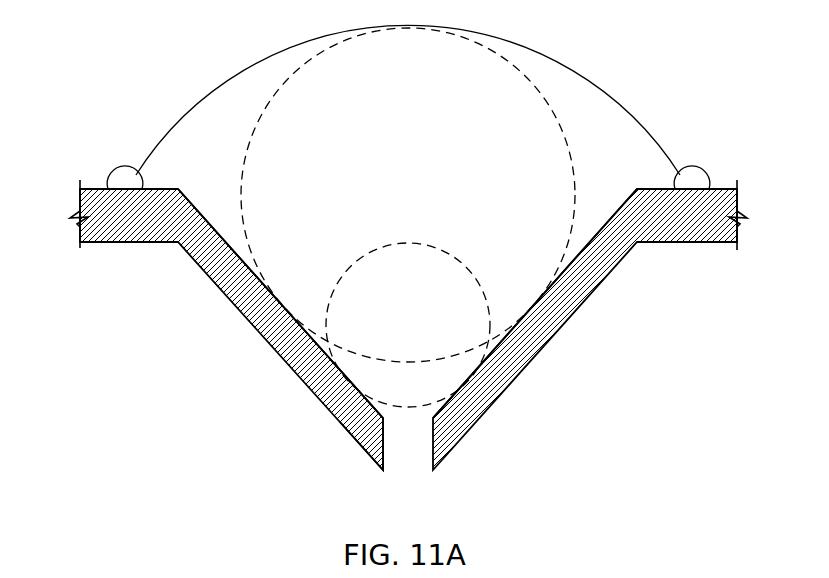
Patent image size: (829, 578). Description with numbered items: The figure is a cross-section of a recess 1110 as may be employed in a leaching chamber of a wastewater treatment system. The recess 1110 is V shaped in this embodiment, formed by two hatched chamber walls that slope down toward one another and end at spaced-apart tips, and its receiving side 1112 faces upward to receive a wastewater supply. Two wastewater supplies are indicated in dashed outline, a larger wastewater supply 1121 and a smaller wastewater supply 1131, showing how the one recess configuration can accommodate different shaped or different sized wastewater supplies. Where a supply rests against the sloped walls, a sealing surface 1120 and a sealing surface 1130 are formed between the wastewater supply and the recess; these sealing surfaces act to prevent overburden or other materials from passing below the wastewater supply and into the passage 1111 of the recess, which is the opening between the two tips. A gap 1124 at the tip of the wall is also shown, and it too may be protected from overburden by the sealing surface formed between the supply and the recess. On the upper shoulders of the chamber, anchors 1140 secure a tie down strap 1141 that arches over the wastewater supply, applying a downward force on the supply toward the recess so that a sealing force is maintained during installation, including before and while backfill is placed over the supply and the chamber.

The recess 1110 is at (197, 373).
The passage 1111 is at (408, 466).
The receiving side 1112 is at (218, 186).
The sealing surface 1120 is at (281, 300).
The wastewater supply 1121 is at (498, 55).
The gap 1124 is at (360, 444).
The sealing surface 1130 is at (345, 378).
The wastewater supply 1131 is at (426, 247).
The anchor 1140 is at (124, 167).
The tie down strap 1141 is at (622, 112).